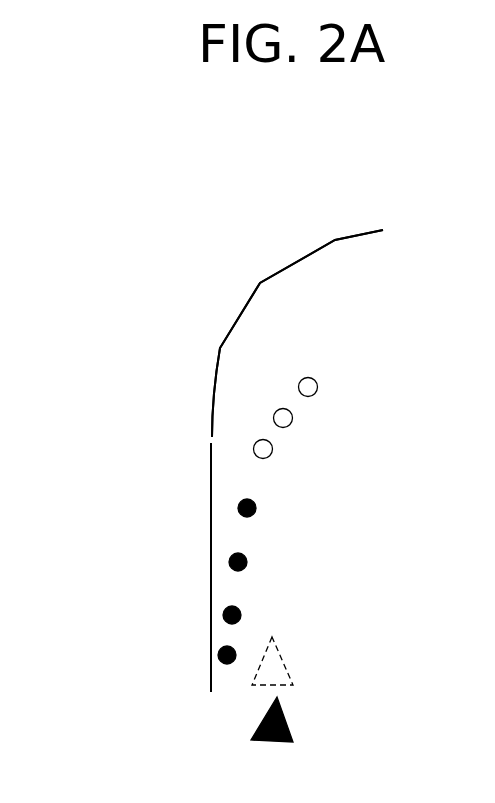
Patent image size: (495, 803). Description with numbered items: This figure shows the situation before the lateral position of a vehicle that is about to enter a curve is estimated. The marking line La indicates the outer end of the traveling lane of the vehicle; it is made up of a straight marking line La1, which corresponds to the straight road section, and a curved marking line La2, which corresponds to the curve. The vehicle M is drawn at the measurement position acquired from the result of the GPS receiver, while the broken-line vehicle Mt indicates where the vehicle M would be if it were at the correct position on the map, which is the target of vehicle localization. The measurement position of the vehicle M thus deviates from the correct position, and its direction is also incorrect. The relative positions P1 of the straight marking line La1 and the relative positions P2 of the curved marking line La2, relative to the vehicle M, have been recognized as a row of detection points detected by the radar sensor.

The marking line La is at (360, 231).
The curved marking line La2 is at (168, 230).
The straight marking line La1 is at (168, 447).
The relative positions of the curved marking line P2 is at (272, 446).
The relative positions of the straight marking line P1 is at (234, 649).
The vehicle at correct position Mt is at (283, 655).
The vehicle M is at (287, 716).